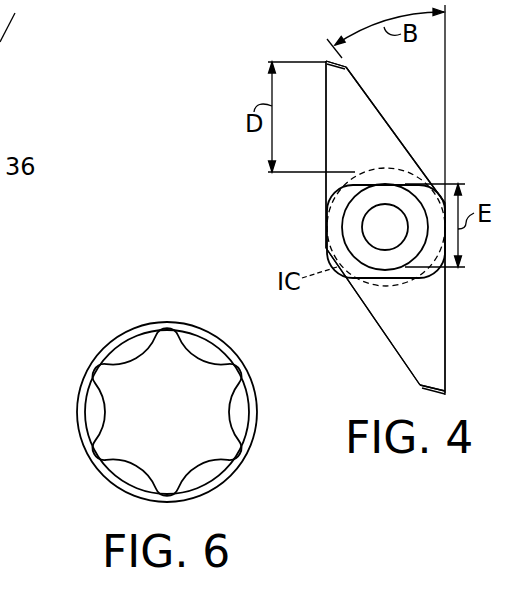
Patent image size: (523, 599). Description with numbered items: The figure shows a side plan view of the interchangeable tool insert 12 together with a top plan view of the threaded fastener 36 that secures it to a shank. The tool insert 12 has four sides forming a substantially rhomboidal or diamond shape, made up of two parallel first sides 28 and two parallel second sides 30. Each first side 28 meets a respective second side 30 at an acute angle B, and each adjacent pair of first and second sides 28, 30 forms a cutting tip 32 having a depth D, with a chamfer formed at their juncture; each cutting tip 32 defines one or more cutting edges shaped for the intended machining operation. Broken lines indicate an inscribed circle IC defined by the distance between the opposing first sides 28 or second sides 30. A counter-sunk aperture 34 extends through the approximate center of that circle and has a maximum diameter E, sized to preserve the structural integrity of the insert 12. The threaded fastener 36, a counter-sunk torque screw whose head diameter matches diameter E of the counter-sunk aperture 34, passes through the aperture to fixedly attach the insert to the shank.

In FIG. 4, the interchangeable tool insert 12 is at (290, 188).
In FIG. 4, the first sides 28 is at (370, 101).
In FIG. 4, the second sides 30 is at (326, 105).
In FIG. 4, the cutting tip 32 is at (358, 141).
In FIG. 4, the counter-sunk aperture 34 is at (343, 222).
In FIG. 6, the threaded fastener 36 is at (71, 456).